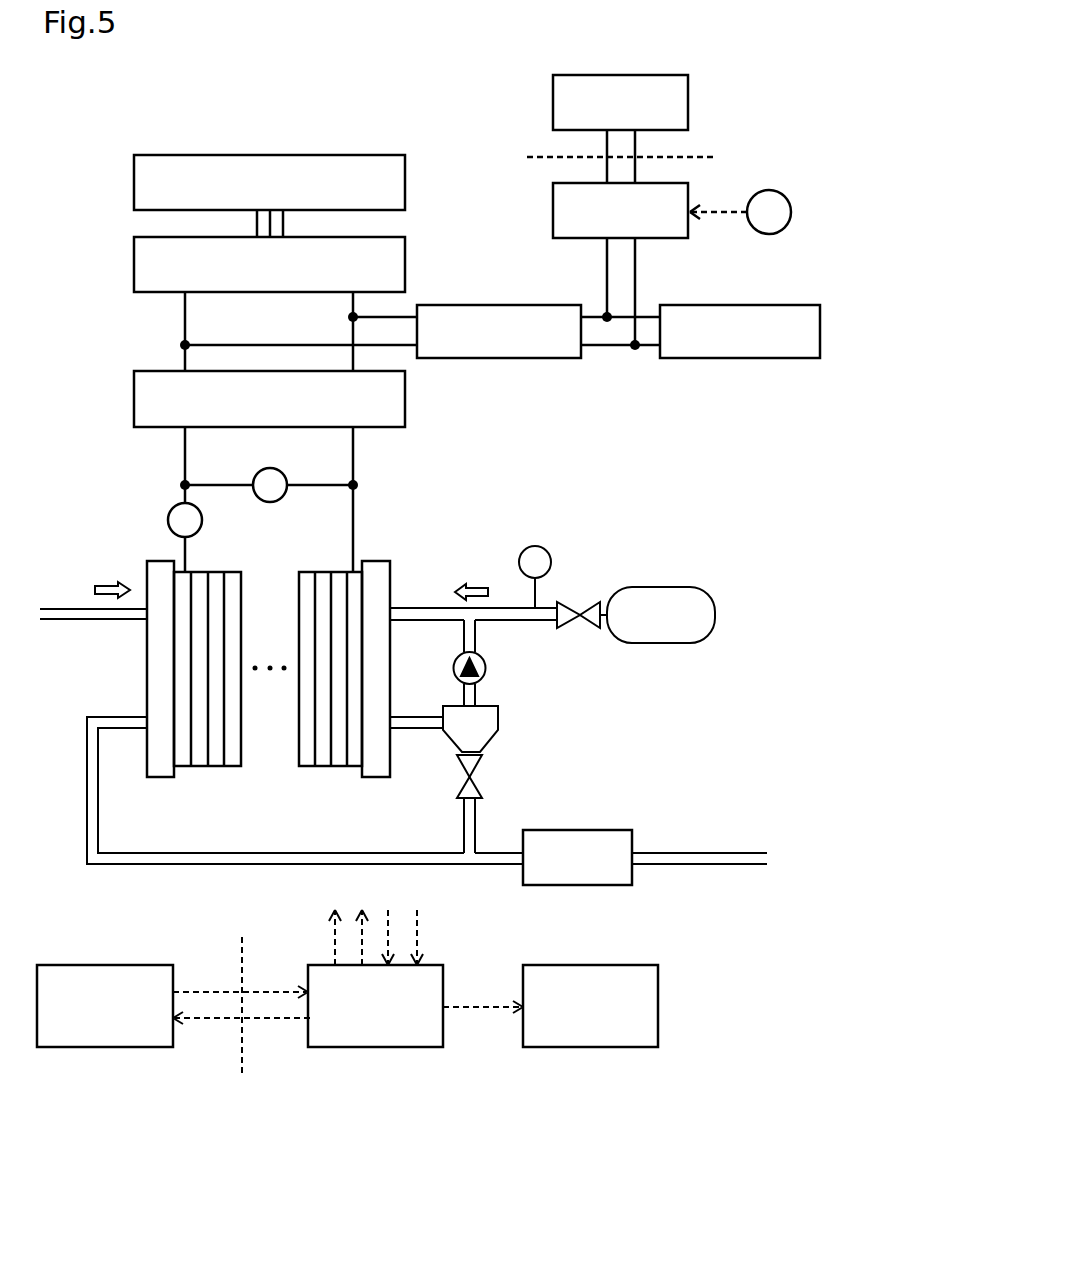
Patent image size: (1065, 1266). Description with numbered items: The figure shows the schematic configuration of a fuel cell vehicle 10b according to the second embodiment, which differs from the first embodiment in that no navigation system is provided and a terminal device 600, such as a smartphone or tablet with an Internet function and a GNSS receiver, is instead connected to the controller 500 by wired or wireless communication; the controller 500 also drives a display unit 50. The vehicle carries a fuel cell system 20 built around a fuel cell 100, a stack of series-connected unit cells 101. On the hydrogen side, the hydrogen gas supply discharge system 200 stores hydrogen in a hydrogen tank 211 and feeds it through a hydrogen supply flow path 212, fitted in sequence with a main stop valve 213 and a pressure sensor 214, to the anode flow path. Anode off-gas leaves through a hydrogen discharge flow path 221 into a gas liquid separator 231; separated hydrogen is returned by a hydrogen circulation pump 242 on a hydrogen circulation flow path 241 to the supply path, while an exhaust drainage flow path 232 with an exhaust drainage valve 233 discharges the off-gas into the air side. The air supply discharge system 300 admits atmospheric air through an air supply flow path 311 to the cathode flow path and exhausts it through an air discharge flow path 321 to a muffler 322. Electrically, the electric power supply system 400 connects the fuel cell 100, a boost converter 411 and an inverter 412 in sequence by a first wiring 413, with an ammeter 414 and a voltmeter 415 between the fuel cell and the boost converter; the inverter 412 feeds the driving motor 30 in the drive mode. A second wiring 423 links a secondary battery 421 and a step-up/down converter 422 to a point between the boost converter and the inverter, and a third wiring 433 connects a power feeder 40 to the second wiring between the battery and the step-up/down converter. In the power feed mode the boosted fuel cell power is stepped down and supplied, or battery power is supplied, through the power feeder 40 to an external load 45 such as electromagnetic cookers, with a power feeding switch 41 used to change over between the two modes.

The fuel cell vehicle 10b is at (162, 100).
The driving motor 30 is at (134, 186).
The inverter 412 is at (134, 267).
The boost converter 411 is at (134, 403).
The first wiring 413 is at (353, 455).
The ammeter 414 is at (172, 512).
The voltmeter 415 is at (263, 502).
The electric power supply system 400 is at (521, 409).
The step-up/down converter 422 is at (490, 305).
The secondary battery 421 is at (728, 305).
The second wiring 423 is at (587, 345).
The third wiring 433 is at (635, 273).
The external load 45 is at (553, 104).
The power feeder 40 is at (553, 214).
The power feeding switch 41 is at (769, 190).
The fuel cell system 20 is at (736, 894).
The fuel cell 100 is at (300, 629).
The unit cell 101 is at (303, 572).
The air supply discharge system 300 is at (101, 536).
The air supply flow path 311 is at (82, 620).
The air discharge flow path 321 is at (260, 852).
The muffler 322 is at (608, 830).
The hydrogen gas supply discharge system 200 is at (731, 543).
The hydrogen tank 211 is at (657, 587).
The hydrogen supply flow path 212 is at (430, 608).
The main stop valve 213 is at (582, 603).
The pressure sensor 214 is at (533, 547).
The hydrogen circulation flow path 241 is at (480, 690).
The hydrogen circulation pump 242 is at (487, 665).
The hydrogen discharge flow path 221 is at (422, 732).
The gas liquid separator 231 is at (498, 720).
The exhaust drainage valve 233 is at (480, 778).
The exhaust drainage flow path 232 is at (462, 840).
The terminal device 600 is at (103, 1047).
The controller 500 is at (374, 1047).
The display unit 50 is at (589, 1047).